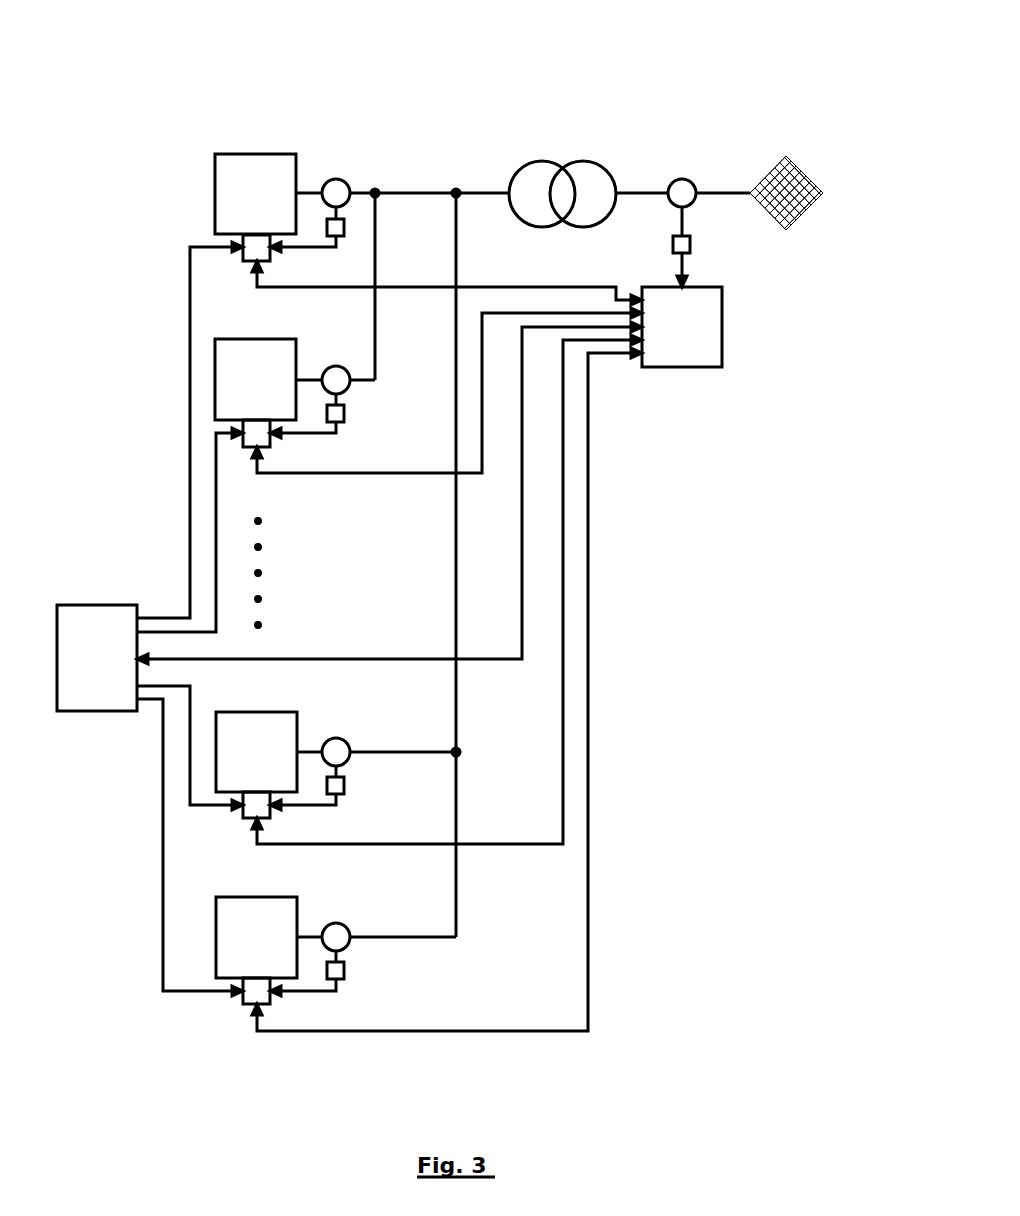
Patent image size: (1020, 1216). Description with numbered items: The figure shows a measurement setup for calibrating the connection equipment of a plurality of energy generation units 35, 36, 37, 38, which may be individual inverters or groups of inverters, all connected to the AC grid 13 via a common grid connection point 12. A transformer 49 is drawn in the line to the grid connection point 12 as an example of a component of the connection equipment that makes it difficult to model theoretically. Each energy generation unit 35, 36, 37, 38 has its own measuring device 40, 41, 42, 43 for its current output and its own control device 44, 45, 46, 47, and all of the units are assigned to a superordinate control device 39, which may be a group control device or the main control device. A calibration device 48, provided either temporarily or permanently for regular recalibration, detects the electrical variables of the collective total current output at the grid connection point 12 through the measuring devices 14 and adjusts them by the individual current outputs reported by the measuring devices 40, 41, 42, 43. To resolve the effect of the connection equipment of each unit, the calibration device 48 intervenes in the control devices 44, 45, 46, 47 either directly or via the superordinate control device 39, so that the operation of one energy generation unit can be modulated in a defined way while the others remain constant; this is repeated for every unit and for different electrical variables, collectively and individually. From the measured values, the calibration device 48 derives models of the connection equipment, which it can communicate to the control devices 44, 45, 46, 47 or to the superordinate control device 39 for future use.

The grid connection point 12 is at (689, 179).
The AC grid 13 is at (810, 181).
The measuring devices 14 is at (700, 249).
The energy generation unit 35 is at (262, 153).
The energy generation unit 36 is at (262, 338).
The energy generation unit 37 is at (262, 711).
The energy generation unit 38 is at (262, 896).
The superordinate control device 39 is at (90, 604).
The measuring device 40 is at (345, 230).
The measuring device 41 is at (345, 415).
The measuring device 42 is at (345, 787).
The measuring device 43 is at (345, 972).
The control device 44 is at (247, 262).
The control device 45 is at (248, 448).
The control device 46 is at (247, 819).
The control device 47 is at (247, 1005).
The calibration device 48 is at (728, 375).
The transformer 49 is at (567, 150).